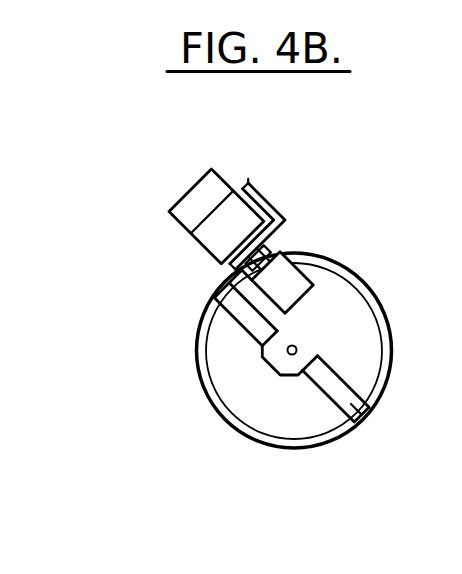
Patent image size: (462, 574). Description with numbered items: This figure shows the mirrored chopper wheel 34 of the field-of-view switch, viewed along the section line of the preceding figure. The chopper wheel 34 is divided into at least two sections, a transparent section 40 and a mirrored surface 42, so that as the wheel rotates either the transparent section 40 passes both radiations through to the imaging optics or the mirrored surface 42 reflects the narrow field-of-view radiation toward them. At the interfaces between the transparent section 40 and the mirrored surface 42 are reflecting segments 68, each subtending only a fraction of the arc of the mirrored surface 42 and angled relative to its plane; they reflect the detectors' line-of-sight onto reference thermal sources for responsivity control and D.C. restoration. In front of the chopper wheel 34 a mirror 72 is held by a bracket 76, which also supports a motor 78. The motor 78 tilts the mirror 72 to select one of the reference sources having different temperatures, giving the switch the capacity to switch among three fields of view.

The chopper wheel 34 is at (387, 317).
The transparent section 40 is at (258, 430).
The mirrored surface 42 is at (341, 332).
The reflecting segments 68 is at (242, 320).
The mirror 72 is at (346, 268).
The bracket 76 is at (267, 195).
The motor 78 is at (185, 197).